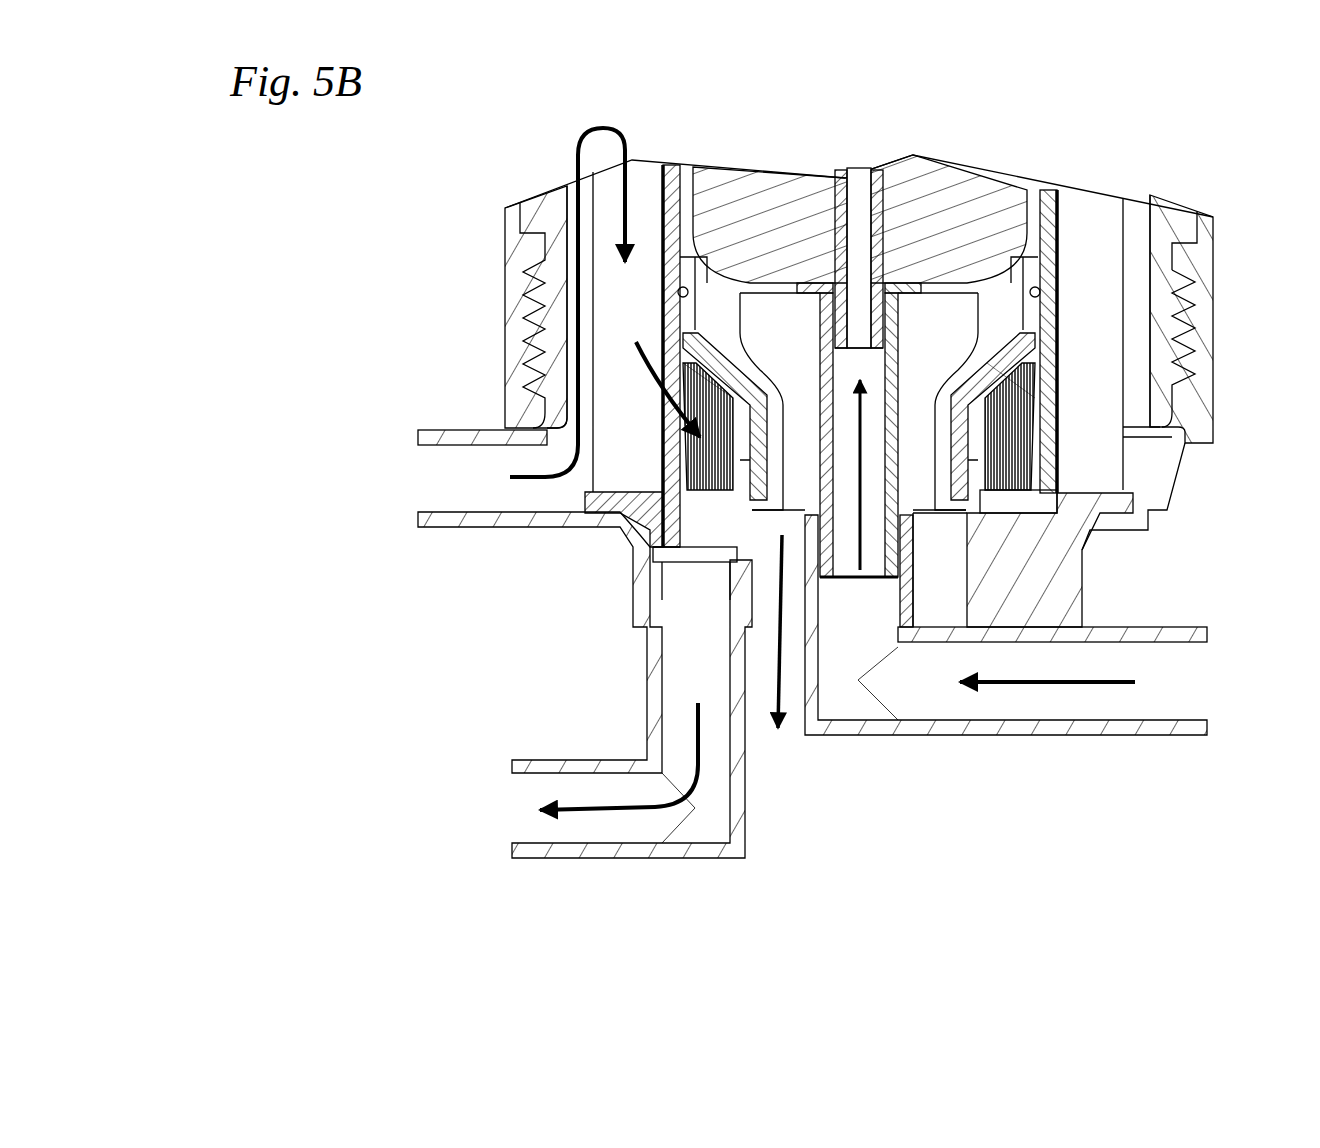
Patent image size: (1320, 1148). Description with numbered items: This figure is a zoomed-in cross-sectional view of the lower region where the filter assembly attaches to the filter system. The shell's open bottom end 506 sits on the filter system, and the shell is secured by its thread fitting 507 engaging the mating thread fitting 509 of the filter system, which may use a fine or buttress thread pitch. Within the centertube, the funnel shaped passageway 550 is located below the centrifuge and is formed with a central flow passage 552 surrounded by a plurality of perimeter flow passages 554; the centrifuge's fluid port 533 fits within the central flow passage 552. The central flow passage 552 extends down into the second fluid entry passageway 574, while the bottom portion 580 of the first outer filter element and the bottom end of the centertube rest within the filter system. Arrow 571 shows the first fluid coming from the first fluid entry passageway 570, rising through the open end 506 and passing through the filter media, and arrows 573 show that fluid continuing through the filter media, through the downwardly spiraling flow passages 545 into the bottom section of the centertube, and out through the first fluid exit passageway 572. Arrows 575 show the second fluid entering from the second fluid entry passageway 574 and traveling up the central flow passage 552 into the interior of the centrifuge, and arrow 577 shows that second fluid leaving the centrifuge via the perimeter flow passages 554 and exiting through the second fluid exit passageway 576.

The open bottom end 506 is at (538, 458).
The thread fitting 507 is at (1180, 283).
The thread fitting 509 is at (1185, 330).
The fluid port 533 is at (833, 323).
The flow passages 545 is at (707, 507).
The funnel shaped passageway 550 is at (687, 317).
The central flow passage 552 is at (893, 357).
The perimeter flow passages 554 is at (715, 285).
The first fluid entry passageway 570 is at (438, 492).
The arrow 571 is at (578, 158).
The first fluid exit passageway 572 is at (522, 822).
The arrows 573 is at (593, 493).
The second fluid entry passageway 574 is at (1185, 697).
The arrows 575 is at (853, 530).
The second fluid exit passageway 576 is at (770, 603).
The arrow 577 is at (780, 727).
The bottom portion 580 is at (620, 507).